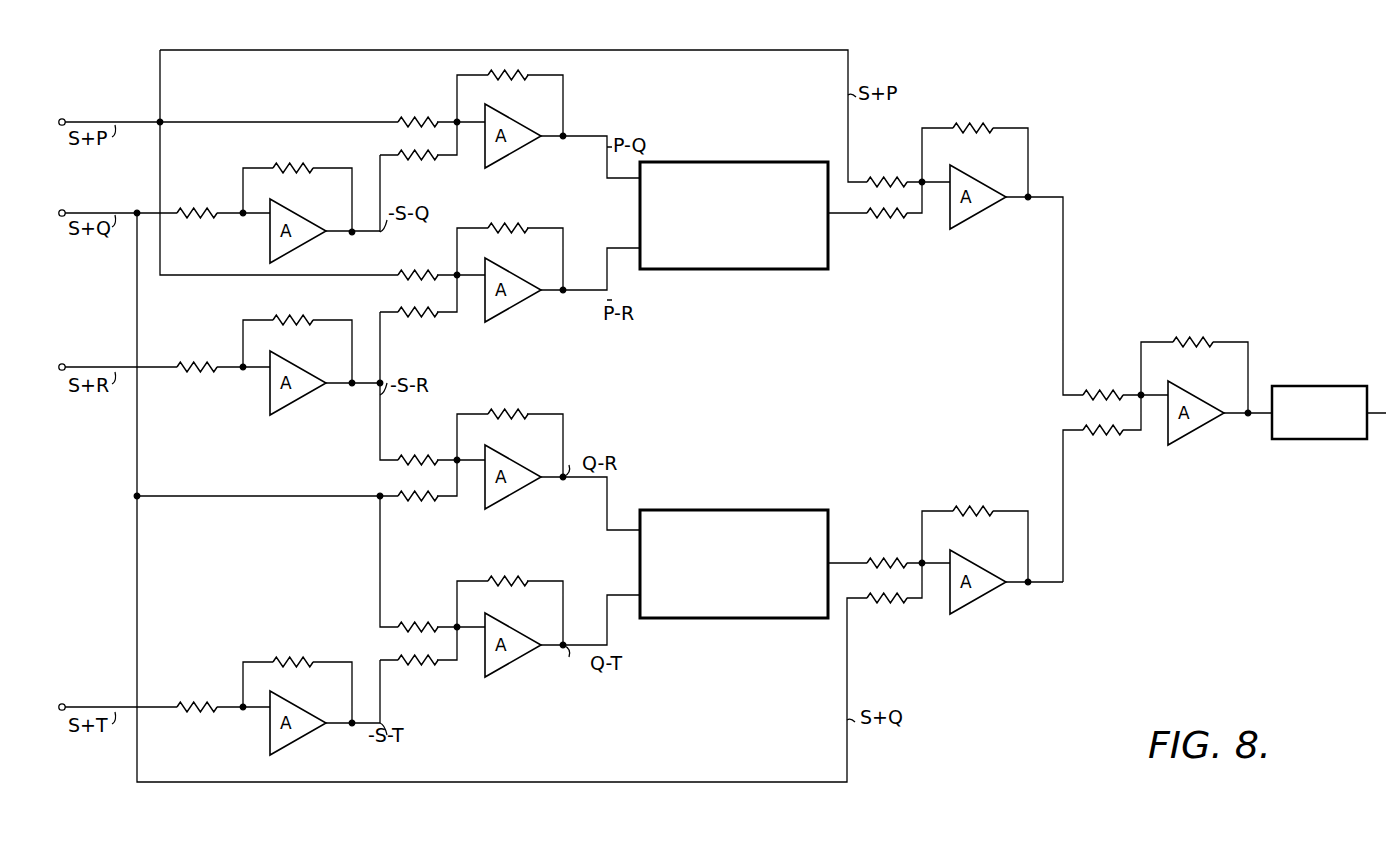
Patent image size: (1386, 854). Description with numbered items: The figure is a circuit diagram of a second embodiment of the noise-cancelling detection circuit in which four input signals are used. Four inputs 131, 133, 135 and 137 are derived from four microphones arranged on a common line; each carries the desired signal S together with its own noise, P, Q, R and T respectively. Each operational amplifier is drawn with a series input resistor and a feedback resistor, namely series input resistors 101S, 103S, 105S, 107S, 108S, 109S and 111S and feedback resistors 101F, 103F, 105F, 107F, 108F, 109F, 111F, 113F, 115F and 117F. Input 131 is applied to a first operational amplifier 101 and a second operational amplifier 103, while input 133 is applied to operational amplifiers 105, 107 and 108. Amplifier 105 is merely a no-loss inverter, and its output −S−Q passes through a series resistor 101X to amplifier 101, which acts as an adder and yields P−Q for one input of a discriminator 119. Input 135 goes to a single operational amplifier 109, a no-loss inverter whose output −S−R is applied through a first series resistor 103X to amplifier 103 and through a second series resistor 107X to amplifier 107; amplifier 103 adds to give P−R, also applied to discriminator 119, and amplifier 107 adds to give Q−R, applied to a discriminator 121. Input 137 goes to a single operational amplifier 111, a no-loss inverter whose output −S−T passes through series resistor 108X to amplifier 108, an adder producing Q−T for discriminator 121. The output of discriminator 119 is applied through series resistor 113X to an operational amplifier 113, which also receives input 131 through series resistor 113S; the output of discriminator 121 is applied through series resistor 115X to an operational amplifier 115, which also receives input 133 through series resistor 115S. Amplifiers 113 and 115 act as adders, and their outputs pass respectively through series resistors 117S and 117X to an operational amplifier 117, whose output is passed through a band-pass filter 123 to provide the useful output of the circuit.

The input 131 is at (65, 118).
The input 133 is at (65, 209).
The input 135 is at (65, 363).
The input 137 is at (65, 703).
The operational amplifier 101 is at (515, 150).
The operational amplifier 103 is at (518, 303).
The operational amplifier 105 is at (302, 246).
The operational amplifier 107 is at (517, 491).
The operational amplifier 108 is at (517, 659).
The operational amplifier 109 is at (302, 397).
The operational amplifier 111 is at (302, 737).
The operational amplifier 113 is at (982, 211).
The operational amplifier 115 is at (982, 596).
The operational amplifier 117 is at (1195, 425).
The discriminator 119 is at (775, 270).
The discriminator 121 is at (765, 510).
The band-pass filter 123 is at (1322, 386).
The series input resistor 101S is at (422, 108).
The feedback resistor 101F is at (511, 86).
The series resistor 101X is at (423, 168).
The series input resistor 103S is at (423, 263).
The feedback resistor 103F is at (512, 216).
The first series resistor 103X is at (424, 324).
The series input resistor 105S is at (201, 201).
The feedback resistor 105F is at (290, 156).
The series input resistor 107S is at (422, 509).
The feedback resistor 107F is at (512, 402).
The second series resistor 107X is at (422, 447).
The series input resistor 108S is at (422, 615).
The feedback resistor 108F is at (512, 569).
The series resistor 108X is at (423, 673).
The series input resistor 109S is at (201, 354).
The feedback resistor 109F is at (291, 308).
The series input resistor 111S is at (201, 696).
The feedback resistor 111F is at (297, 649).
The series resistor 113S is at (887, 171).
The feedback resistor 113F is at (975, 116).
The series resistor 113X is at (890, 225).
The series resistor 115S is at (889, 612).
The feedback resistor 115F is at (975, 500).
The series resistor 115X is at (887, 550).
The series resistor 117S is at (1106, 382).
The feedback resistor 117F is at (1195, 331).
The series resistor 117X is at (1106, 444).